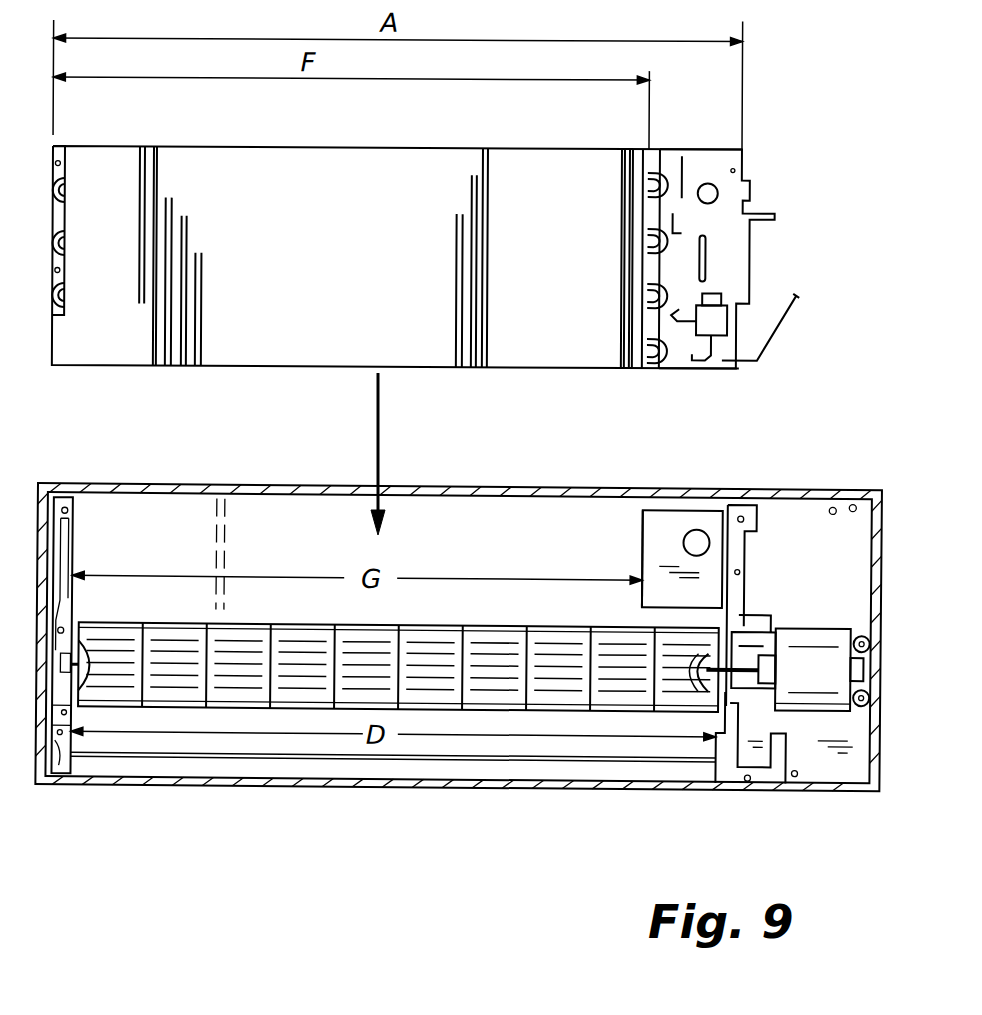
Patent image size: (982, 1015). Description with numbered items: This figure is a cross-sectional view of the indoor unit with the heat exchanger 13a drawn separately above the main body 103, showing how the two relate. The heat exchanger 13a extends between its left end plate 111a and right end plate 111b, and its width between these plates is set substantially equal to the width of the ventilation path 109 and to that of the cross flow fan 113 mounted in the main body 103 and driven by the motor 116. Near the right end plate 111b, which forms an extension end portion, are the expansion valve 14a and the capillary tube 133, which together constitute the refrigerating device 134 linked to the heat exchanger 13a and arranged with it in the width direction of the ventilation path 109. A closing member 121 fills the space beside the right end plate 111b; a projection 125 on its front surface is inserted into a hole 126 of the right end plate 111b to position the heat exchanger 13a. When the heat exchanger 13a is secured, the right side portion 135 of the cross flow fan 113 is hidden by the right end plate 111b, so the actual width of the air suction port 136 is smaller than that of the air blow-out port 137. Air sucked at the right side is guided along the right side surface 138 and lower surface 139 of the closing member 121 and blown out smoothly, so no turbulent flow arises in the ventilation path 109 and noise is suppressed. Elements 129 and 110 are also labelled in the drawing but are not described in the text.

The heat exchanger 13a is at (380, 257).
The left end plate 111a is at (62, 160).
The right coil header 129 is at (648, 160).
The right end plate 111b is at (702, 160).
The hole 126 is at (717, 186).
The capillary tube 133 is at (710, 250).
The expansion valve 14a is at (718, 313).
The refrigerating device 134 is at (788, 284).
The main body 103 is at (822, 480).
The ventilation path 109 is at (135, 553).
The cross flow fan 113 is at (227, 677).
The air blow-out port 137 is at (305, 742).
The air suction port 136 is at (458, 527).
The right side surface 138 is at (640, 540).
The closing member 121 is at (660, 520).
The projection 125 is at (698, 524).
The end panel 110 is at (785, 518).
The lower surface 139 is at (716, 607).
The motor 116 is at (825, 640).
The right side portion 135 is at (672, 678).